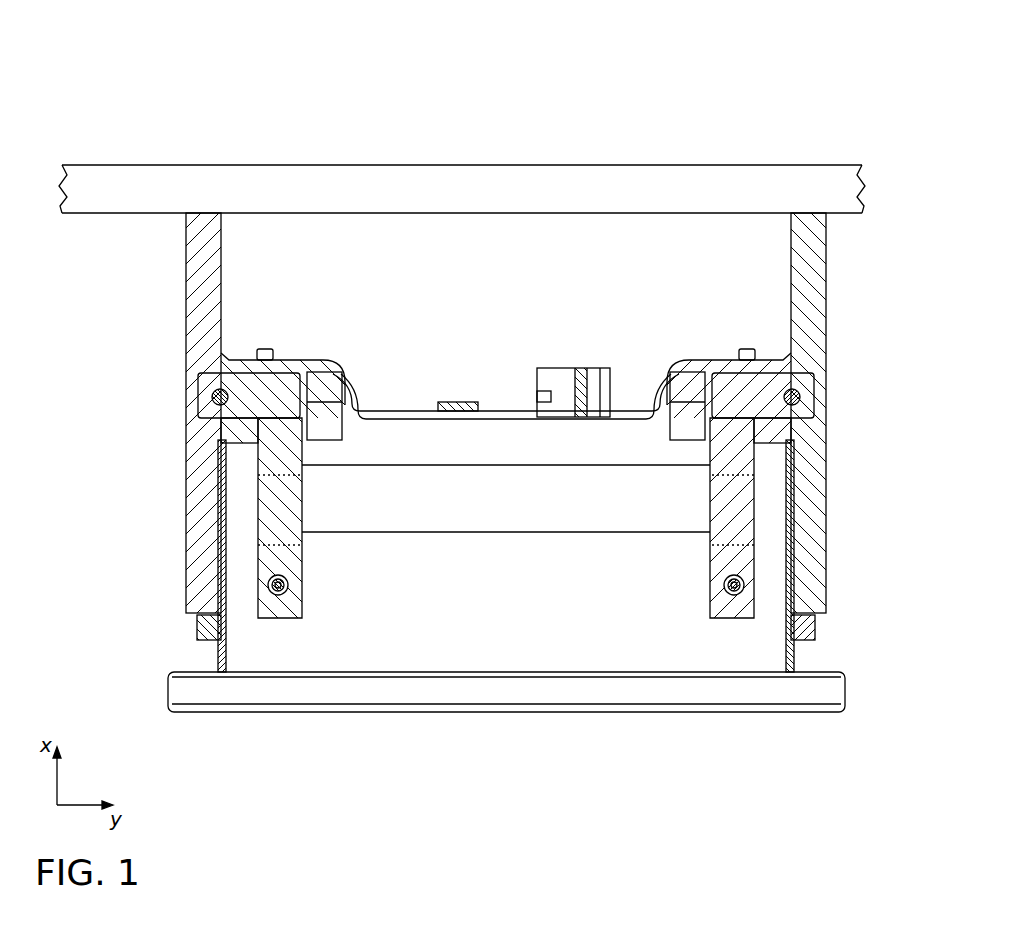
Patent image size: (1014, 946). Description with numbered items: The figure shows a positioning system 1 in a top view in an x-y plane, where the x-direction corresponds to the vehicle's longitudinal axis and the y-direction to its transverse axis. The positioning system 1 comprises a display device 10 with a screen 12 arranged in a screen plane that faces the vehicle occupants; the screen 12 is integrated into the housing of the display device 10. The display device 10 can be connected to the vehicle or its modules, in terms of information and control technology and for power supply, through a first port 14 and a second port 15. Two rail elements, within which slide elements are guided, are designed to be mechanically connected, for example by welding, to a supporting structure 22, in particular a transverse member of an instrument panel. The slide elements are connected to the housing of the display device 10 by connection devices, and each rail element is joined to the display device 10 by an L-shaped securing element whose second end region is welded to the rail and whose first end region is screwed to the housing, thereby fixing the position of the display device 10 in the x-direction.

The positioning system 1 is at (247, 82).
The display device 10 is at (642, 752).
The screen 12 is at (490, 704).
The first port 14 is at (463, 405).
The second port 15 is at (562, 383).
The supporting structure 22 is at (535, 177).